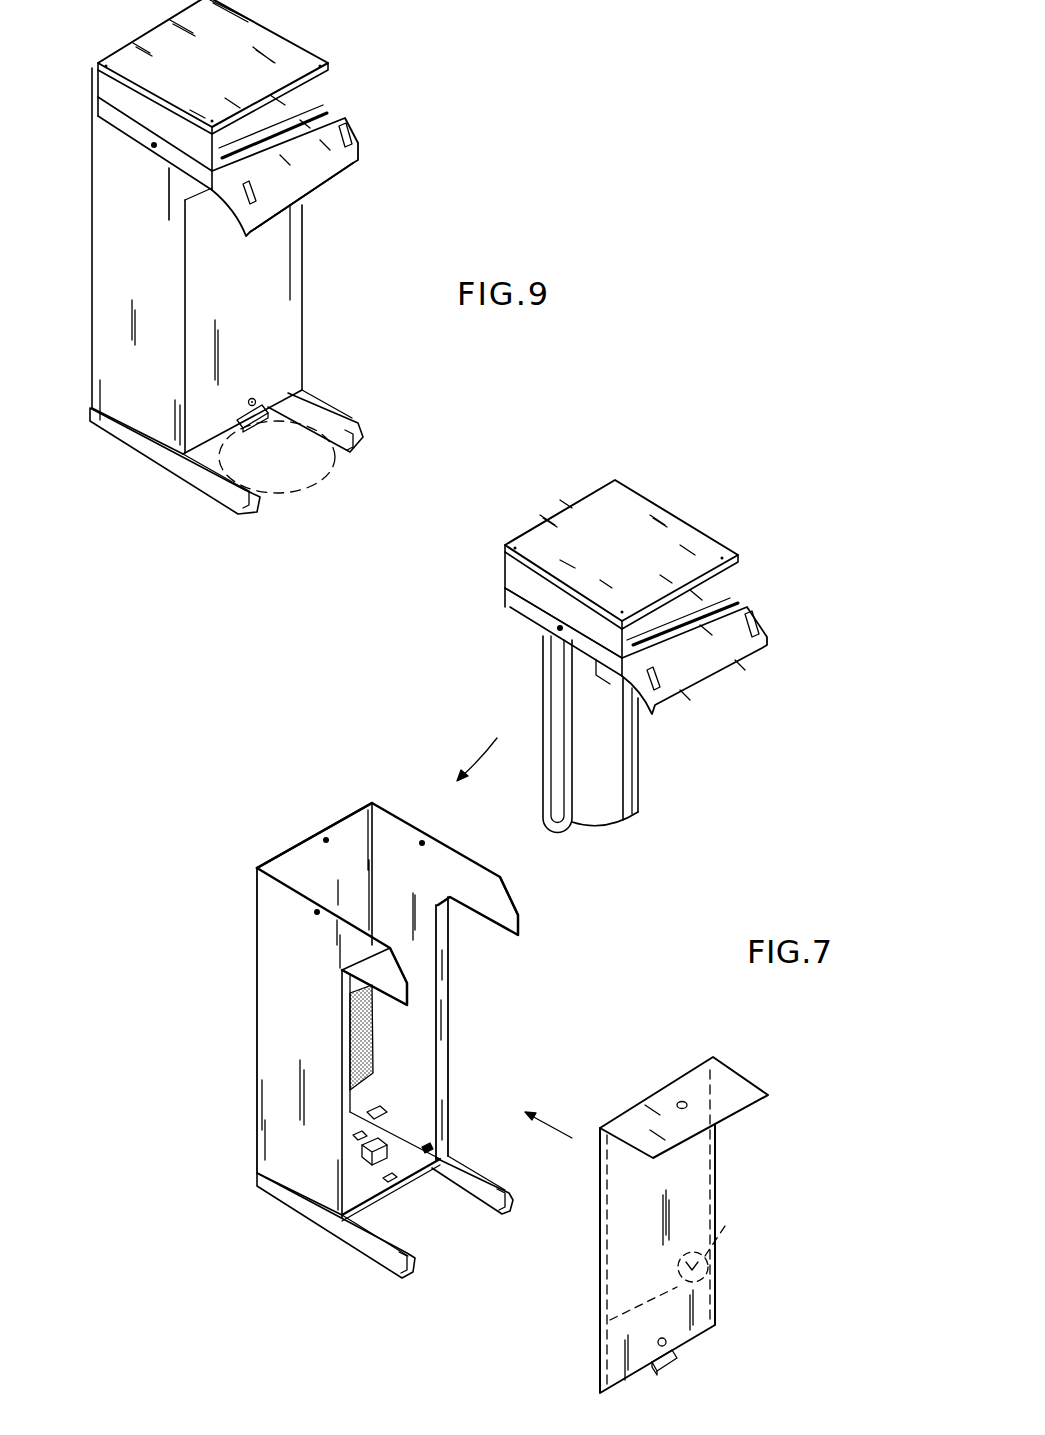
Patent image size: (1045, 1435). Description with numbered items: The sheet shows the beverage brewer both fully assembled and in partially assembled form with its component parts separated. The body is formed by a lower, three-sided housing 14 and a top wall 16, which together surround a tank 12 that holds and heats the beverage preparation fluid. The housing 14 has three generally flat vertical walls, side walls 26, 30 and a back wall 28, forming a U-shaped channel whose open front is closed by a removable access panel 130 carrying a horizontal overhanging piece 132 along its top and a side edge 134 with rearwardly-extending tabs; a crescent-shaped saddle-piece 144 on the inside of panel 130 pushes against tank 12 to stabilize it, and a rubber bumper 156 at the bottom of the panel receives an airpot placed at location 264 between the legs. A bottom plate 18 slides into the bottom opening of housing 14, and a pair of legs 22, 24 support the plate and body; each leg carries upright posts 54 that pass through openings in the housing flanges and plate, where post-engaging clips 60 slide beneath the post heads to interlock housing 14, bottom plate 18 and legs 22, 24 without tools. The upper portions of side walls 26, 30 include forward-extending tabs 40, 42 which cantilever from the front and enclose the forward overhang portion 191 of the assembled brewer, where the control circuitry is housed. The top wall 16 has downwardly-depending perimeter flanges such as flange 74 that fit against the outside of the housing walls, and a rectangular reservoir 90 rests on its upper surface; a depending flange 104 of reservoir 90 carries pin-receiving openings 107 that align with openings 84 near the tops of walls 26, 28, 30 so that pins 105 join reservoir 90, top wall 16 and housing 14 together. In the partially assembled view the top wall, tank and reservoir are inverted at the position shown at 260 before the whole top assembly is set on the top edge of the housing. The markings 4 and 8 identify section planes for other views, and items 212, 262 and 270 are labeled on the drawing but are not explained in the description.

In FIG. 9, the section line 4- 4 is at (290, 292).
In FIG. 9, the section line 8- 8 is at (97, 22).
In FIG. 9, the tank 12 is at (197, 261).
In FIG. 7, the tank 12 is at (600, 812).
In FIG. 7, the housing 14 is at (349, 1026).
In FIG. 9, the top wall 16 is at (337, 113).
In FIG. 7, the top wall 16 is at (750, 603).
In FIG. 7, the bottom plate 18 is at (368, 1193).
In FIG. 9, the leg 22 is at (345, 418).
In FIG. 7, the leg 22 is at (472, 1188).
In FIG. 9, the leg 24 is at (207, 485).
In FIG. 7, the leg 24 is at (360, 1243).
In FIG. 7, the side wall 26 is at (398, 812).
In FIG. 7, the back wall 28 is at (270, 866).
In FIG. 7, the side wall 30 is at (266, 972).
In FIG. 7, the tab 40 is at (406, 986).
In FIG. 7, the tab 42 is at (512, 928).
In FIG. 7, the post 54 is at (372, 1106).
In FIG. 7, the clip 60 is at (386, 1110).
In FIG. 7, the perimeter flange 74 is at (510, 609).
In FIG. 7, the opening 84 is at (326, 838).
In FIG. 7, the reservoir 90 is at (560, 534).
In FIG. 7, the flange 104 is at (594, 662).
In FIG. 9, the pin 105 is at (151, 147).
In FIG. 7, the pin-receiving opening 107 is at (557, 631).
In FIG. 7, the access panel 130 is at (667, 1223).
In FIG. 7, the overhanging piece 132 is at (728, 1082).
In FIG. 7, the side edge 134 is at (716, 1243).
In FIG. 7, the saddle-piece 144 is at (685, 1258).
In FIG. 9, the rubber bumper 156 is at (258, 404).
In FIG. 9, the forward overhang portion 191 is at (370, 141).
In FIG. 7, the hole 212 is at (682, 1099).
In FIG. 7, the inverted top assembly position 260 is at (609, 670).
In FIG. 9, the chute 262 is at (337, 177).
In FIG. 9, the location 264 is at (327, 473).
In FIG. 7, the pad 270 is at (363, 1033).